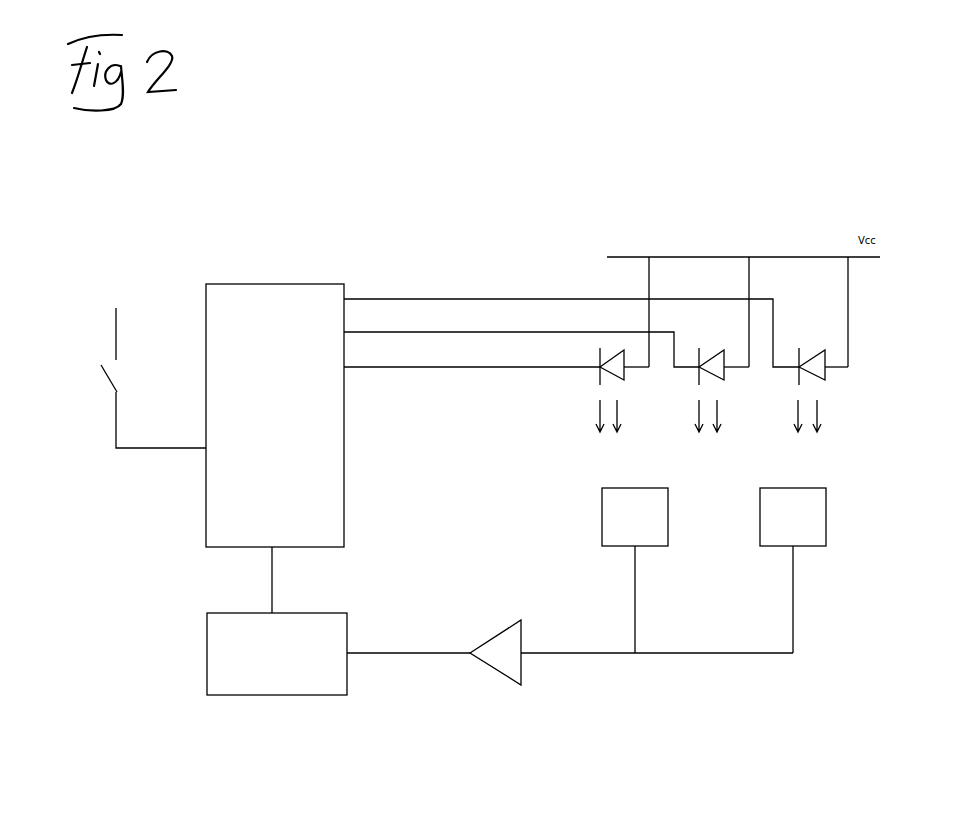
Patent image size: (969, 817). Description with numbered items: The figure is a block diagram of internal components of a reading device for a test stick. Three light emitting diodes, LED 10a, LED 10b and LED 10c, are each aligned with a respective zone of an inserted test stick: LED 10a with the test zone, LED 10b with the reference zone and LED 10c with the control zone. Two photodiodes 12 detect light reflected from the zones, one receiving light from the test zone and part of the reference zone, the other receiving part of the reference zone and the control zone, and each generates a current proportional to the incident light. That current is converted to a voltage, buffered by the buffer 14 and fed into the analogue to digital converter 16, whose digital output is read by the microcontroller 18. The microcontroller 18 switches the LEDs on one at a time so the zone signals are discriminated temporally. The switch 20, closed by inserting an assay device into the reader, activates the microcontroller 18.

The LED 10a is at (616, 375).
The LED 10b is at (718, 376).
The LED 10c is at (818, 373).
The photodiode 12 is at (641, 534).
The buffer 14 is at (519, 675).
The analogue to digital converter 16 is at (282, 678).
The microcontroller 18 is at (283, 463).
The switch 20 is at (102, 381).